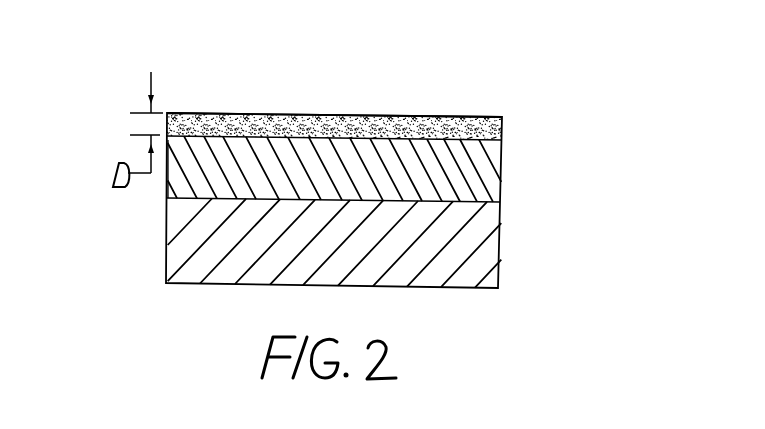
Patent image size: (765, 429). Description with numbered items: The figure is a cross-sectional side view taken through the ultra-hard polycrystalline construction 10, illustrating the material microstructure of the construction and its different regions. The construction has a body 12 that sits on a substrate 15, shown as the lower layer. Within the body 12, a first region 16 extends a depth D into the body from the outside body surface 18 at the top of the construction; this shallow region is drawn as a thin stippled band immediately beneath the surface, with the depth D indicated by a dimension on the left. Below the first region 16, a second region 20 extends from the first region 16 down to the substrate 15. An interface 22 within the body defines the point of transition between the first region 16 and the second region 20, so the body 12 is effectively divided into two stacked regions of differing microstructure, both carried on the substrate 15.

The ultra-hard polycrystalline construction 10 is at (567, 145).
The body 12 is at (504, 178).
The substrate 15 is at (477, 257).
The first region 16 is at (447, 137).
The outside body surface 18 is at (357, 114).
The second region 20 is at (180, 173).
The interface 22 is at (257, 135).